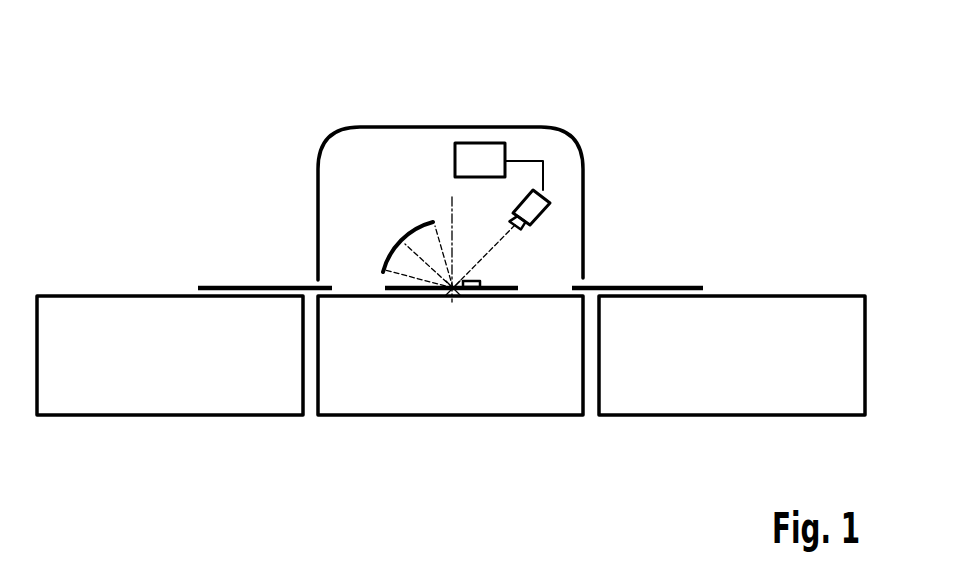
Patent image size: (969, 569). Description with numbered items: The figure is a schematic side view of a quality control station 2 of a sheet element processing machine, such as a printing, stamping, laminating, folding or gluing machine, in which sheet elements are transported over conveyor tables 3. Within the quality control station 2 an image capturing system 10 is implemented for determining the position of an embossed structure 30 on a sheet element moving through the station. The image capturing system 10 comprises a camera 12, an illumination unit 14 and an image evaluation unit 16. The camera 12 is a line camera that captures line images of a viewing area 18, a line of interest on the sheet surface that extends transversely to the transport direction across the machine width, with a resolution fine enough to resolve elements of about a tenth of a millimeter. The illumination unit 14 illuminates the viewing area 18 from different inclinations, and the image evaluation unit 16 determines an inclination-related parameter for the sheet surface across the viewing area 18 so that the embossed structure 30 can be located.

The quality control station 2 is at (548, 81).
The conveyor tables 3 is at (170, 415).
The image capturing system 10 is at (426, 157).
The camera 12 is at (545, 193).
The illumination unit 14 is at (392, 255).
The image evaluation unit 16 is at (480, 143).
The viewing area 18 is at (460, 297).
The embossed structure 30 is at (477, 281).